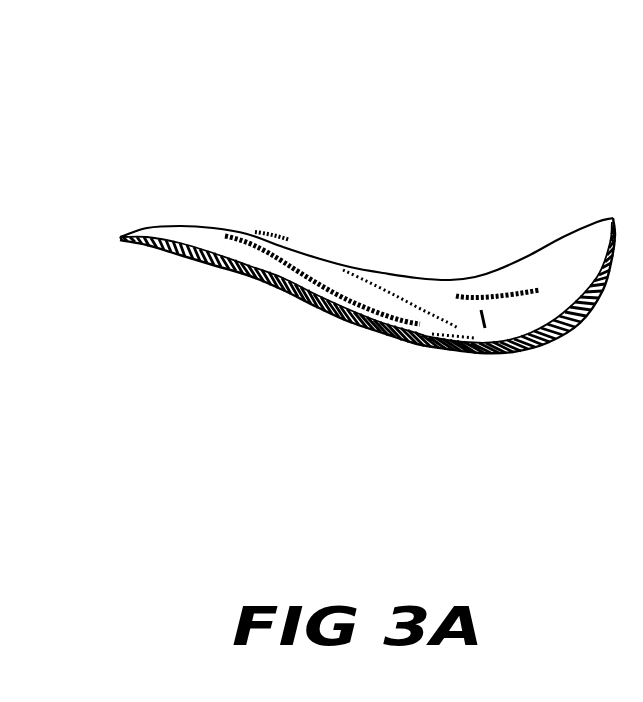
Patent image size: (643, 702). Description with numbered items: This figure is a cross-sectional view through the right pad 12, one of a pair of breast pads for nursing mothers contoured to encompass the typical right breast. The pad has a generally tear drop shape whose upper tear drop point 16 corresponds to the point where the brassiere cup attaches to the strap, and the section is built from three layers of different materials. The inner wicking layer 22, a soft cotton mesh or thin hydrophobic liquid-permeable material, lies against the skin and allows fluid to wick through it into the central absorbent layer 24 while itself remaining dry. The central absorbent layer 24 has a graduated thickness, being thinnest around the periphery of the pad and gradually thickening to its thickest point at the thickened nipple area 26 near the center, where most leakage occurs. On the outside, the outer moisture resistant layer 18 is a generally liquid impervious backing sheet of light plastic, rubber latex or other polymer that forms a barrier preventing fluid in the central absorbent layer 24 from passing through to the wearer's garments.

The right pad 12 is at (642, 17).
The upper tear drop point 16 is at (118, 240).
The outer moisture resistant layer 18 is at (297, 301).
The inner wicking layer 22 is at (263, 242).
The central absorbent layer 24 is at (325, 263).
The thickened nipple area 26 is at (515, 286).